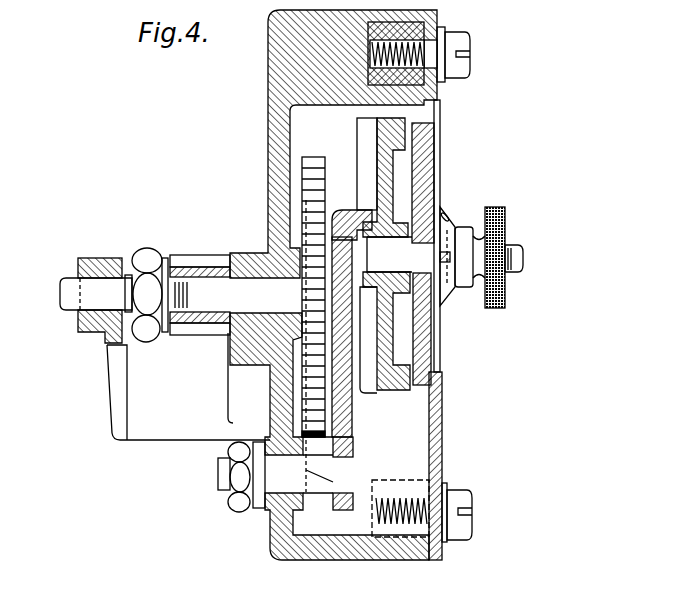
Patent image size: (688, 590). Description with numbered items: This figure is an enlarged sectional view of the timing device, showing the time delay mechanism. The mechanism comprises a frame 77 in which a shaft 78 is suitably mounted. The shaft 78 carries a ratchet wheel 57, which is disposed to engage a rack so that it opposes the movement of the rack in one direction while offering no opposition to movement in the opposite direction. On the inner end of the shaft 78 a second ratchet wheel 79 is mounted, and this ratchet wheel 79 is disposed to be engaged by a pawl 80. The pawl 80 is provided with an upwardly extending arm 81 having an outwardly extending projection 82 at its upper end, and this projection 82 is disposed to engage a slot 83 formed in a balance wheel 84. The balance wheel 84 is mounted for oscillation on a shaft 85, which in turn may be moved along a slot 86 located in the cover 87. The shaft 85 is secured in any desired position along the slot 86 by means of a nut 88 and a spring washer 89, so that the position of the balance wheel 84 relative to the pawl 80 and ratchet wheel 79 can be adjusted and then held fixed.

The frame 77 is at (267, 112).
The ratchet wheel 57 is at (193, 257).
The shaft 78 is at (72, 313).
The ratchet wheel 79 is at (316, 157).
The pawl 80 is at (337, 437).
The arm 81 is at (354, 408).
The projection 82 is at (353, 212).
The slot 83 is at (360, 169).
The balance wheel 84 is at (401, 117).
The shaft 85 is at (440, 218).
The slot 86 is at (440, 338).
The cover 87 is at (444, 428).
The nut 88 is at (500, 208).
The spring washer 89 is at (443, 291).